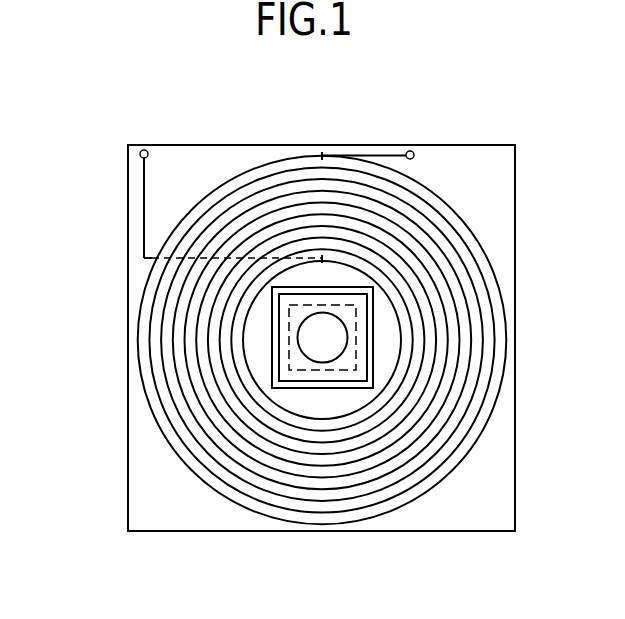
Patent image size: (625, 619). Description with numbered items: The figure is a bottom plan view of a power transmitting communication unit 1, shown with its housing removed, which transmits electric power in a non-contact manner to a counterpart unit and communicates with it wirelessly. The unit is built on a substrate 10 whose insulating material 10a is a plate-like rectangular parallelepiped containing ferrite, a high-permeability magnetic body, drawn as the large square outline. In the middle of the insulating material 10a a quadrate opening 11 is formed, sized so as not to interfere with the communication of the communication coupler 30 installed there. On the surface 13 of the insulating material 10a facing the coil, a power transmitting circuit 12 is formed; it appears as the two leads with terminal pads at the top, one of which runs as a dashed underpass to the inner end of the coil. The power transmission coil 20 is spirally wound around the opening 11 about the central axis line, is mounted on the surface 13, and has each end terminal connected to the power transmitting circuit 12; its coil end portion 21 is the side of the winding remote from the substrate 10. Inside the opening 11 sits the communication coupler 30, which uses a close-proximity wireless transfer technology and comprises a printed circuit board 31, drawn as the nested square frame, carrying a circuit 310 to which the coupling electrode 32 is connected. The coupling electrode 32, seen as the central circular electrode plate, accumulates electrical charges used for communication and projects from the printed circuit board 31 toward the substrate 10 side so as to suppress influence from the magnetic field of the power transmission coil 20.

The power transmitting communication unit 1 is at (458, 97).
The substrate 10 is at (500, 200).
The insulating material 10a is at (500, 162).
The opening 11 is at (432, 445).
The power transmitting circuit 12 is at (145, 180).
The surface 13 is at (502, 434).
The power transmission coil 20 is at (360, 341).
The coil end portion 21 is at (433, 465).
The communication coupler 30 is at (291, 437).
The printed circuit board 31 is at (330, 376).
The coupling electrode 32 is at (313, 338).
The circuit 310 is at (347, 360).